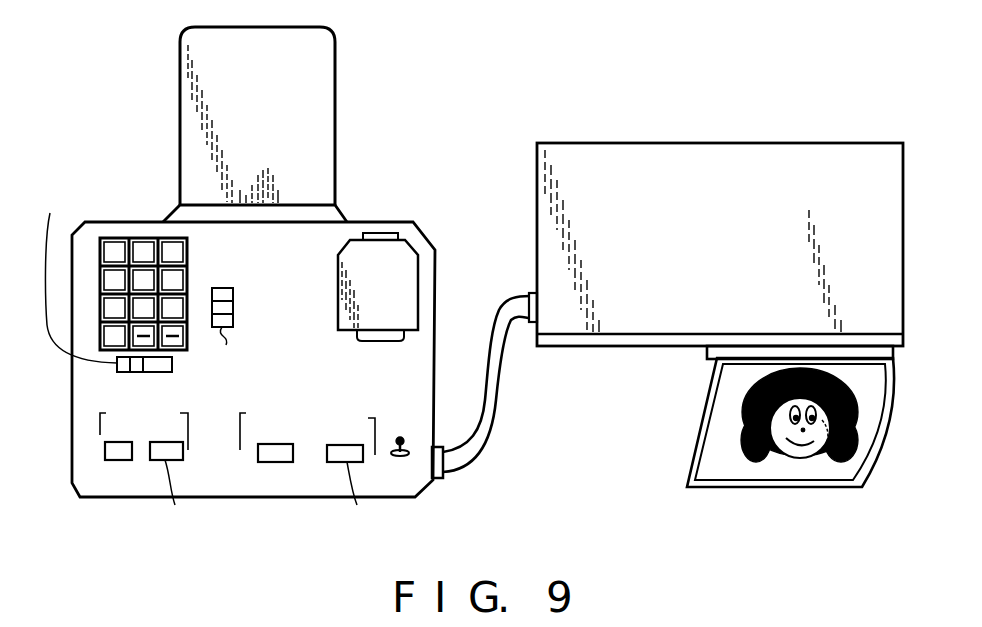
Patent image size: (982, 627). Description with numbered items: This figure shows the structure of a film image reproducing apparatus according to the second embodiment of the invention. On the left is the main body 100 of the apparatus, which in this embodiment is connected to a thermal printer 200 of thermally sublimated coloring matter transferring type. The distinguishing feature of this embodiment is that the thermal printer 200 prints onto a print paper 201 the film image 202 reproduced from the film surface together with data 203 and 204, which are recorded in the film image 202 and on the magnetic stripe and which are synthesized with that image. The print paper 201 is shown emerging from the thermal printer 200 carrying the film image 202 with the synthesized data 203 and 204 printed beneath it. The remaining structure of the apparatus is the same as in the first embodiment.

The main body 100 is at (283, 296).
The thermal printer 200 is at (595, 347).
The print paper 201 is at (687, 488).
The film image 202 is at (750, 410).
The data 203 is at (745, 480).
The data 204 is at (830, 480).